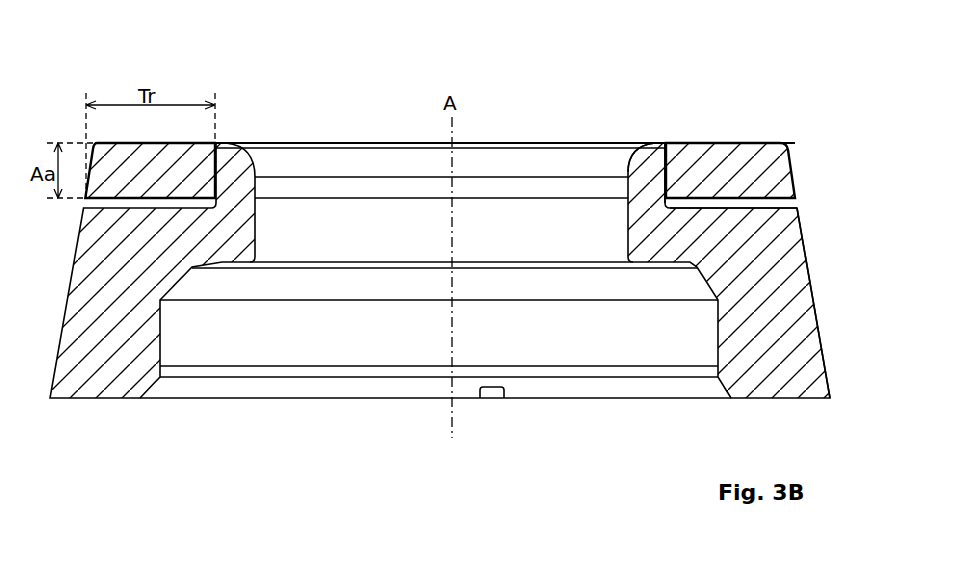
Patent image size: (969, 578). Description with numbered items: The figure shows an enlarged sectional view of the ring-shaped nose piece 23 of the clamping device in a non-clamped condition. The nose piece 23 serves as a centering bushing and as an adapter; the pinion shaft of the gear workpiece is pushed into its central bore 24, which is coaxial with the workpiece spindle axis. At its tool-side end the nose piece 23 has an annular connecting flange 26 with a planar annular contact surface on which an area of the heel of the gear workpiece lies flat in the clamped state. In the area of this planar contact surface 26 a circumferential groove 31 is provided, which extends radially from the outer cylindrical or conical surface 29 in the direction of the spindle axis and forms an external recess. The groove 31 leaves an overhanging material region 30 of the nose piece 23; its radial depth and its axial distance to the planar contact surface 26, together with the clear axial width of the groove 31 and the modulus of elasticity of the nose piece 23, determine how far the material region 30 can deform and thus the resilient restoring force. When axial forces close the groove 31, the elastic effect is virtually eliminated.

The nose piece 23 is at (168, 41).
The central bore 24 is at (372, 122).
The connecting flange 26 is at (695, 145).
The outer cylindrical or conical surface 29 is at (818, 308).
The overhanging material region 30 is at (757, 138).
The circumferential groove 31 is at (800, 208).